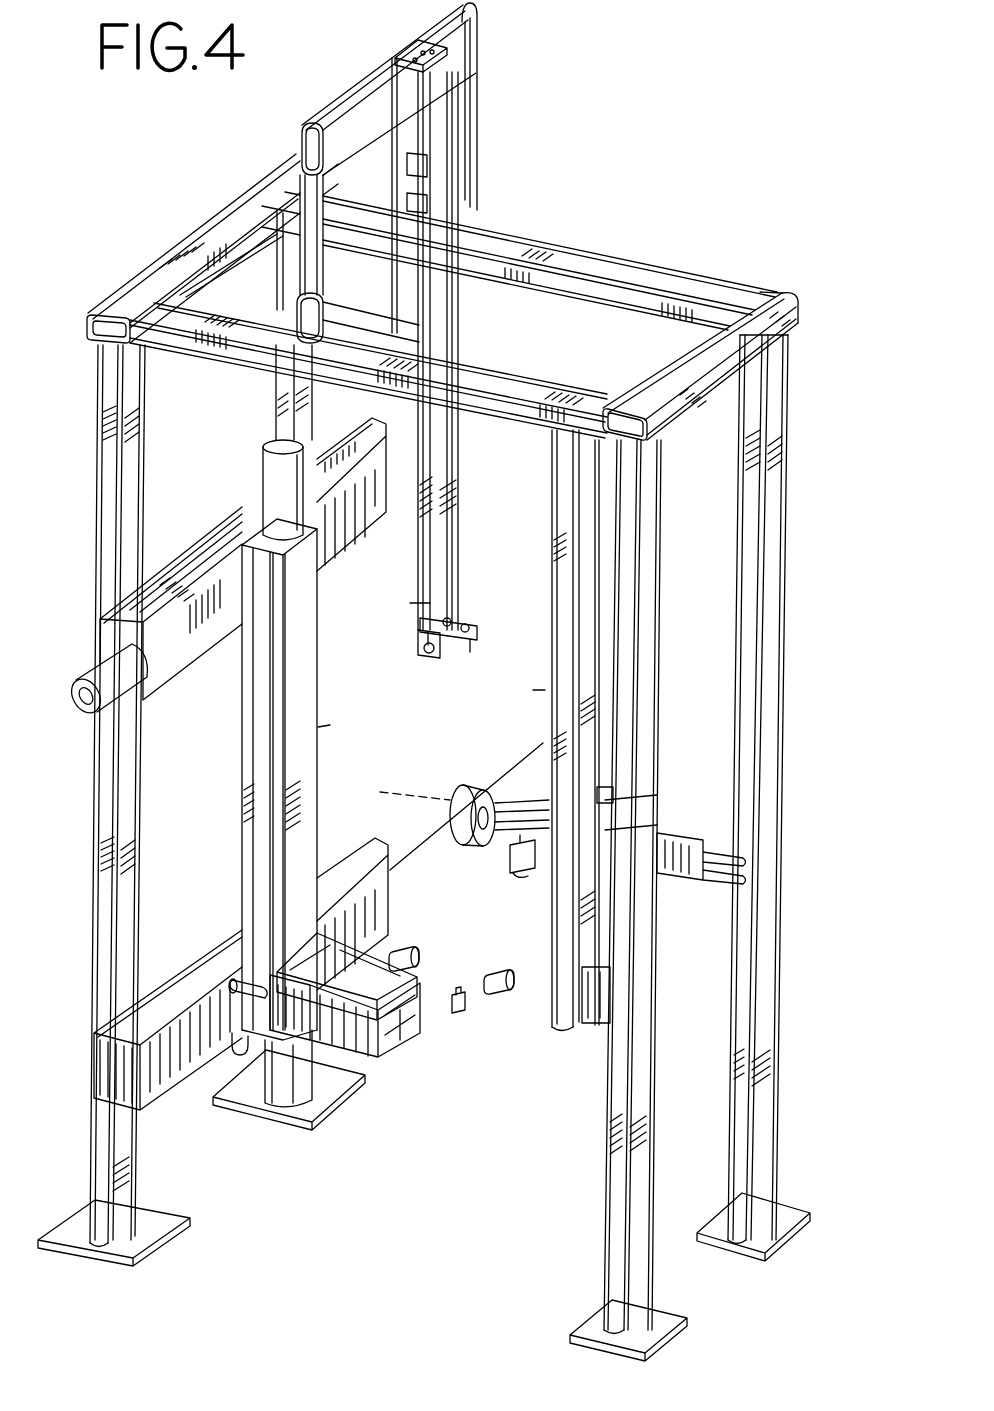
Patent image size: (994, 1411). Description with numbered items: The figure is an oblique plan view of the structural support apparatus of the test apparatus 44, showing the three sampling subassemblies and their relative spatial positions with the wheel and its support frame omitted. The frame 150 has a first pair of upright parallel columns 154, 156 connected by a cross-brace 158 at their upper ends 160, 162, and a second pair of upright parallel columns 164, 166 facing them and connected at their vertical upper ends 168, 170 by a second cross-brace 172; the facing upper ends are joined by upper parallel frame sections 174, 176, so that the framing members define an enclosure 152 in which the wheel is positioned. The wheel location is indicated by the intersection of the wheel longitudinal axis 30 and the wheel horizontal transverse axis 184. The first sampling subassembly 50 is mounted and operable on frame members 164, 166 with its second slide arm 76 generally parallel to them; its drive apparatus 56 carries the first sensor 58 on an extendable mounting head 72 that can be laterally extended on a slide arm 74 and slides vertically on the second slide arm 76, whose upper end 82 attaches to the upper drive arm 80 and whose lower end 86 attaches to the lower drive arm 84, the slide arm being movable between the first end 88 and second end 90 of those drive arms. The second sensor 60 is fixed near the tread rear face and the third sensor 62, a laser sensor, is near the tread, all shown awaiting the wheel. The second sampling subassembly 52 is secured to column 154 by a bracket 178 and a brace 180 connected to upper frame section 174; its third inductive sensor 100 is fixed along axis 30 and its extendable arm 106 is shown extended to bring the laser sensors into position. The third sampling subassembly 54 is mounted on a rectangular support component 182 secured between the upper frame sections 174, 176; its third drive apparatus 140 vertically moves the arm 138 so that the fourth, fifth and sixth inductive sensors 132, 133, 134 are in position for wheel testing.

The wheel longitudinal axis 30 is at (405, 790).
The test apparatus 44 is at (681, 154).
The first sampling subassembly 50 is at (256, 1142).
The second sampling subassembly 52 is at (533, 690).
The third sampling subassembly 54 is at (414, 600).
The drive apparatus 56 is at (327, 724).
The first sensor 58 is at (410, 950).
The second sensor 60 is at (510, 992).
The third sensor 62 is at (463, 1012).
The extendable mounting head 72 is at (373, 937).
The slide arm 74 is at (333, 1028).
The second slide arm 76 is at (303, 807).
The upper drive arm 80 is at (184, 685).
The upper end 82 is at (303, 490).
The lower drive arm 84 is at (176, 1086).
The lower end 86 is at (233, 1045).
The first end 88 is at (143, 702).
The second end 90 is at (388, 505).
The third inductive sensor 100 is at (520, 872).
The arm 106 is at (498, 795).
The fourth inductive sensor 132 is at (468, 620).
The fifth inductive sensor 133 is at (452, 612).
The sixth inductive sensor 134 is at (437, 657).
The arm 138 is at (460, 495).
The third drive apparatus 140 is at (390, 330).
The frame 150 is at (770, 296).
The enclosure 152 is at (540, 340).
The column 154 is at (652, 1298).
The column 156 is at (778, 1146).
The cross-brace 158 is at (717, 390).
The upper end 160 is at (662, 432).
The upper end 162 is at (790, 335).
The column 164 is at (93, 948).
The column 166 is at (273, 407).
The upper end 168 is at (95, 348).
The upper end 170 is at (262, 252).
The second cross-brace 172 is at (187, 240).
The upper frame section 174 is at (555, 378).
The upper frame section 176 is at (668, 268).
The bracket 178 is at (597, 1028).
The brace 180 is at (560, 1028).
The rectangular support component 182 is at (477, 34).
The wheel horizontal transverse axis 184 is at (420, 862).